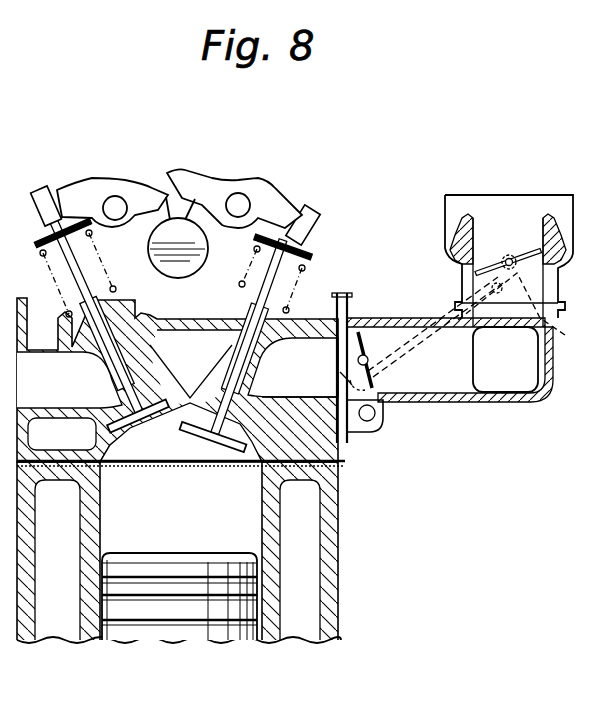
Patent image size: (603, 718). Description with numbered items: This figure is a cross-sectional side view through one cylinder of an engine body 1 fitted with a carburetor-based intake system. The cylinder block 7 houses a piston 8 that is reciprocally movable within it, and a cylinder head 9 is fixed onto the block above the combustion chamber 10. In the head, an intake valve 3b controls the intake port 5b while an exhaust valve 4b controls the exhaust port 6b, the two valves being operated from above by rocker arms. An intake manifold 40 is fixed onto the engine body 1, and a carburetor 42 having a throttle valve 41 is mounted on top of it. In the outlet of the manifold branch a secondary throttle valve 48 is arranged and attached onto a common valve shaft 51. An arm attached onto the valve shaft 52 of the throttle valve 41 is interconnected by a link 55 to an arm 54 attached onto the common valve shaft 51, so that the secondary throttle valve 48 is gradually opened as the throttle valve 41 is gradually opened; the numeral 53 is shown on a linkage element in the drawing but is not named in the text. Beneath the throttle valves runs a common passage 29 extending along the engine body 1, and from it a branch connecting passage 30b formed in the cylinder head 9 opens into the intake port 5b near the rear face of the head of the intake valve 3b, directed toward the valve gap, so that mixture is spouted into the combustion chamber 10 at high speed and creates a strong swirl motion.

The engine body 1 is at (356, 552).
The intake valve 3b is at (220, 326).
The exhaust valve 4b is at (128, 328).
The intake port 5b is at (310, 363).
The exhaust port 6b is at (74, 389).
The cylinder block 7 is at (273, 630).
The piston 8 is at (182, 633).
The cylinder head 9 is at (340, 450).
The combustion chamber 10 is at (189, 491).
The common passage 29 is at (375, 423).
The branch connecting passage 30b is at (287, 375).
The intake manifold 40 is at (487, 403).
The throttle valve 41 is at (530, 264).
The carburetor 42 is at (547, 233).
The secondary throttle valve 48 is at (377, 381).
The common valve shaft 51 is at (356, 333).
The valve shaft 52 is at (510, 256).
The link 53 is at (522, 308).
The arm 54 is at (333, 355).
The link 55 is at (412, 322).